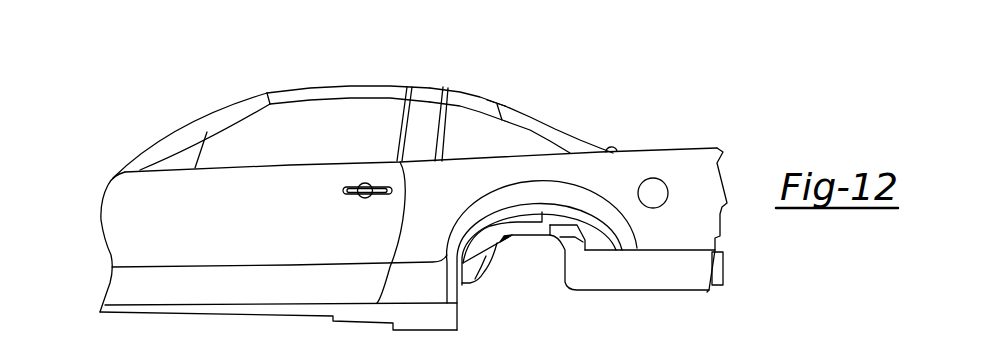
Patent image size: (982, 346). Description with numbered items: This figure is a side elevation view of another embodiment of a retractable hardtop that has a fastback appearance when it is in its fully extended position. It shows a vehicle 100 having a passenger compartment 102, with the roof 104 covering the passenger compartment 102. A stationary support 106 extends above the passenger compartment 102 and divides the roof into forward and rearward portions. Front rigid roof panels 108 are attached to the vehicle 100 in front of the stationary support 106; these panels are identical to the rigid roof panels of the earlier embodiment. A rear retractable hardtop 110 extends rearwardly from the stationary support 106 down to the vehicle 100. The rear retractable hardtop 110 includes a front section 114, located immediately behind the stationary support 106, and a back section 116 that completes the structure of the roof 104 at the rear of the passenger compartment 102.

The vehicle 100 is at (134, 121).
The passenger compartment 102 is at (320, 155).
The roof 104 is at (486, 96).
The stationary support 106 is at (430, 90).
The front rigid roof panels 108 is at (330, 92).
The rear retractable hardtop 110 is at (472, 35).
The front section 114 is at (463, 95).
The back section 116 is at (580, 140).